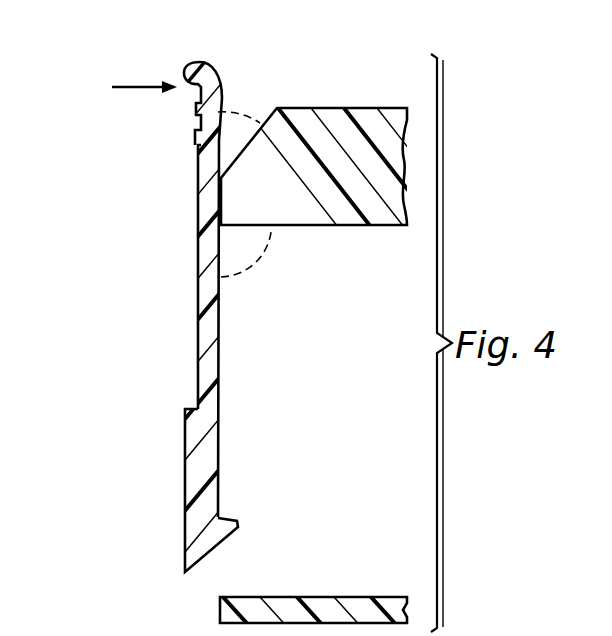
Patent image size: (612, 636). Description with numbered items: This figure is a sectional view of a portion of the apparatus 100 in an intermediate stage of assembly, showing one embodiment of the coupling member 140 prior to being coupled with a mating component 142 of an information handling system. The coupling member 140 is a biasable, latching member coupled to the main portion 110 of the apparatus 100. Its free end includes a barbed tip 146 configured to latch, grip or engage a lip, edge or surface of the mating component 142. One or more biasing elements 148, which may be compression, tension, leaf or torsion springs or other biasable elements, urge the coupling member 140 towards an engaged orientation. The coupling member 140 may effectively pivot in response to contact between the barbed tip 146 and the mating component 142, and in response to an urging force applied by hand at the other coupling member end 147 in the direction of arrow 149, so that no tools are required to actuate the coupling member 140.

The apparatus 100 is at (89, 211).
The main portion 110 is at (358, 107).
The coupling member 140 is at (197, 297).
The mating component 142 is at (222, 607).
The barbed tip 146 is at (228, 532).
The coupling member end 147 is at (211, 62).
The biasing element 148 is at (244, 117).
The arrow 149 is at (140, 85).